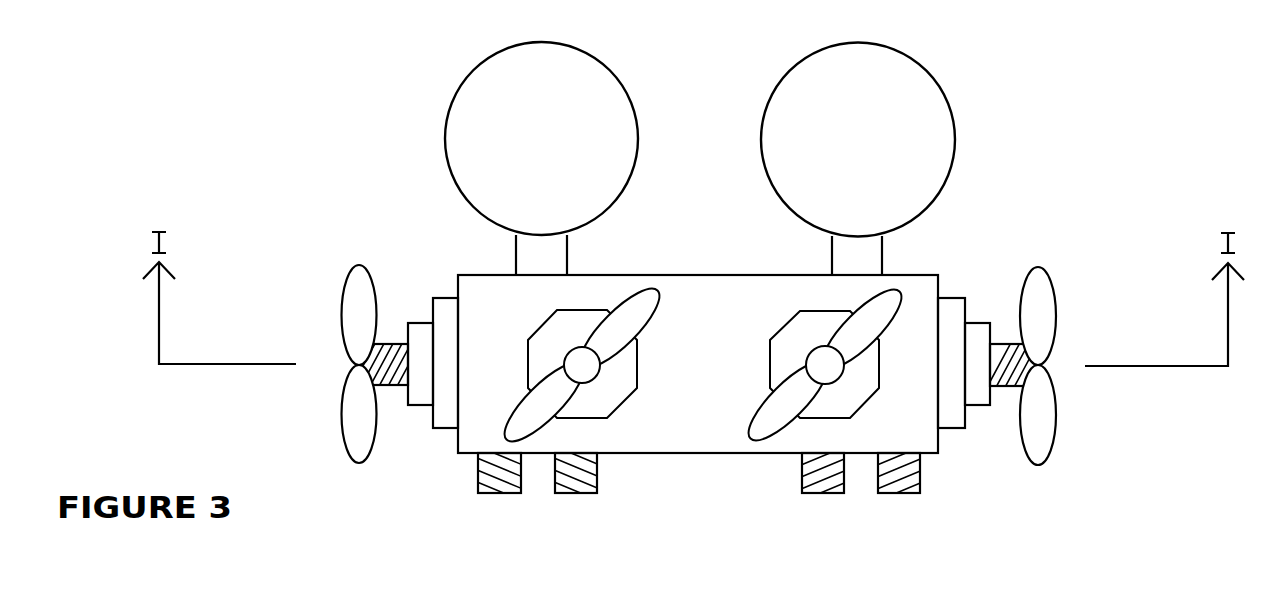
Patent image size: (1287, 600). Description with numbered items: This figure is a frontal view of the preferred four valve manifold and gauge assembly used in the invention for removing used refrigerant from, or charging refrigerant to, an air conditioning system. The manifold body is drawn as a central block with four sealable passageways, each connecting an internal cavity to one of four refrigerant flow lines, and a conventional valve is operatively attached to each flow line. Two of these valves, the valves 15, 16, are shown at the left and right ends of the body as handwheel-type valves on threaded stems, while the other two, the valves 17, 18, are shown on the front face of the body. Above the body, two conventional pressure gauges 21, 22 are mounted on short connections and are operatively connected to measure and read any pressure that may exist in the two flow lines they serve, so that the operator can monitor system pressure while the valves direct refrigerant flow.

The valve 15 is at (343, 411).
The valve 16 is at (1056, 425).
The valve 17 is at (643, 325).
The valve 18 is at (758, 415).
The pressure gauge 21 is at (455, 92).
The pressure gauge 22 is at (765, 115).